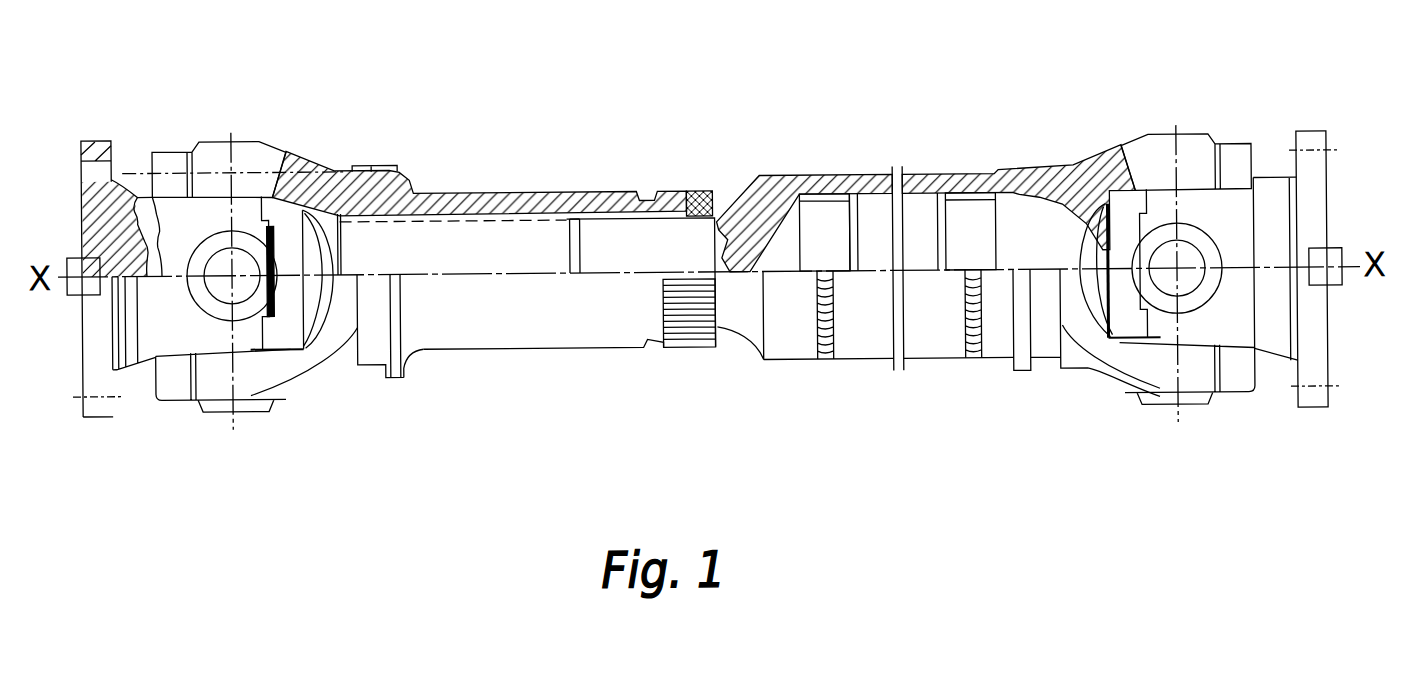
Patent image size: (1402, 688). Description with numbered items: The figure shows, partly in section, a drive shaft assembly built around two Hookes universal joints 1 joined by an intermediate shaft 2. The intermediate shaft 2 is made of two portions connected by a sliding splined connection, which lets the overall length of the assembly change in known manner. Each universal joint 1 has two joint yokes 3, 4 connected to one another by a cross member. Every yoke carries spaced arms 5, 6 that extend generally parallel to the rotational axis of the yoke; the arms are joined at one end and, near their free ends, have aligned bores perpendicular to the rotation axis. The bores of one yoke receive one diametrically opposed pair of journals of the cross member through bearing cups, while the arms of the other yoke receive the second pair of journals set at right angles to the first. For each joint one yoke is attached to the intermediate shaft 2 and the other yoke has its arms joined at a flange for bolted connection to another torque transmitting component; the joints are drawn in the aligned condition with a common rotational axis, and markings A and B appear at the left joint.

The Hookes universal joint 1 is at (240, 121).
The intermediate shaft 2 is at (750, 157).
The joint yoke 3 is at (160, 325).
The joint yoke 4 is at (260, 378).
The arm 5 is at (293, 360).
The arm 6 is at (248, 169).
The section plane A is at (127, 163).
The section plane B is at (308, 164).